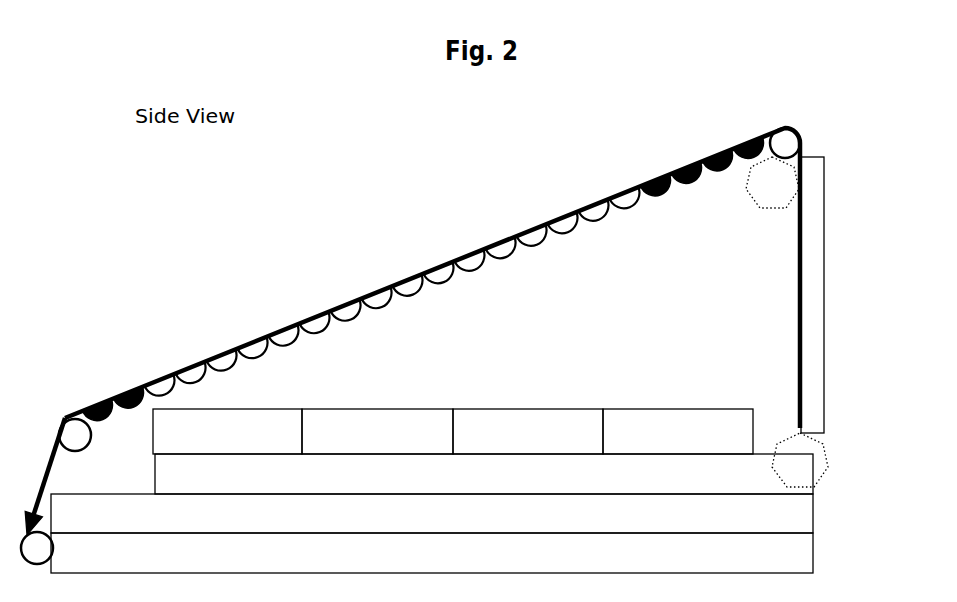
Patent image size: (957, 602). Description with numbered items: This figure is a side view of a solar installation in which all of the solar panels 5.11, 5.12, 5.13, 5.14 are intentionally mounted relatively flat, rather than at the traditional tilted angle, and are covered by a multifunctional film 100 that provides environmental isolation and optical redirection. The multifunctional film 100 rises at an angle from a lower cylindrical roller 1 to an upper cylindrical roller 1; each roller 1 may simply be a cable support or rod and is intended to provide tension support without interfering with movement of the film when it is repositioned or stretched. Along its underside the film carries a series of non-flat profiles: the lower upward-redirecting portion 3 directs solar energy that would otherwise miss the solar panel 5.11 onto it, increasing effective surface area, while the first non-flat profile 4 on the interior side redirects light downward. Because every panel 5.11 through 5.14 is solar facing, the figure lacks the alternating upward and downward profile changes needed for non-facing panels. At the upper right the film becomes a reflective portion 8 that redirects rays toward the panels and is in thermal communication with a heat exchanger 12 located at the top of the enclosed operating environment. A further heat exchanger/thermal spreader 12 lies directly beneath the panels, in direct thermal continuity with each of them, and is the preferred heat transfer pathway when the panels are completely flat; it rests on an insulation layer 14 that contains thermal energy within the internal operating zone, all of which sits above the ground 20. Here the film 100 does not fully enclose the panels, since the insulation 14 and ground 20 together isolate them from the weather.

The multifunctional film 100 is at (798, 222).
The cylindrical roller 1 is at (410, 346).
The second non-flat profile 3 is at (416, 284).
The first non-flat profile 4 is at (395, 293).
The backside reflective surface 8 is at (816, 295).
The heat exchanger / thermal spreader 12 is at (491, 325).
The solar panel 5.11 is at (140, 410).
The solar panel 5.12 is at (382, 310).
The solar panel 5.13 is at (528, 431).
The solar panel 5.14 is at (678, 431).
The insulation layer 14 is at (432, 513).
The ground 20 is at (432, 553).